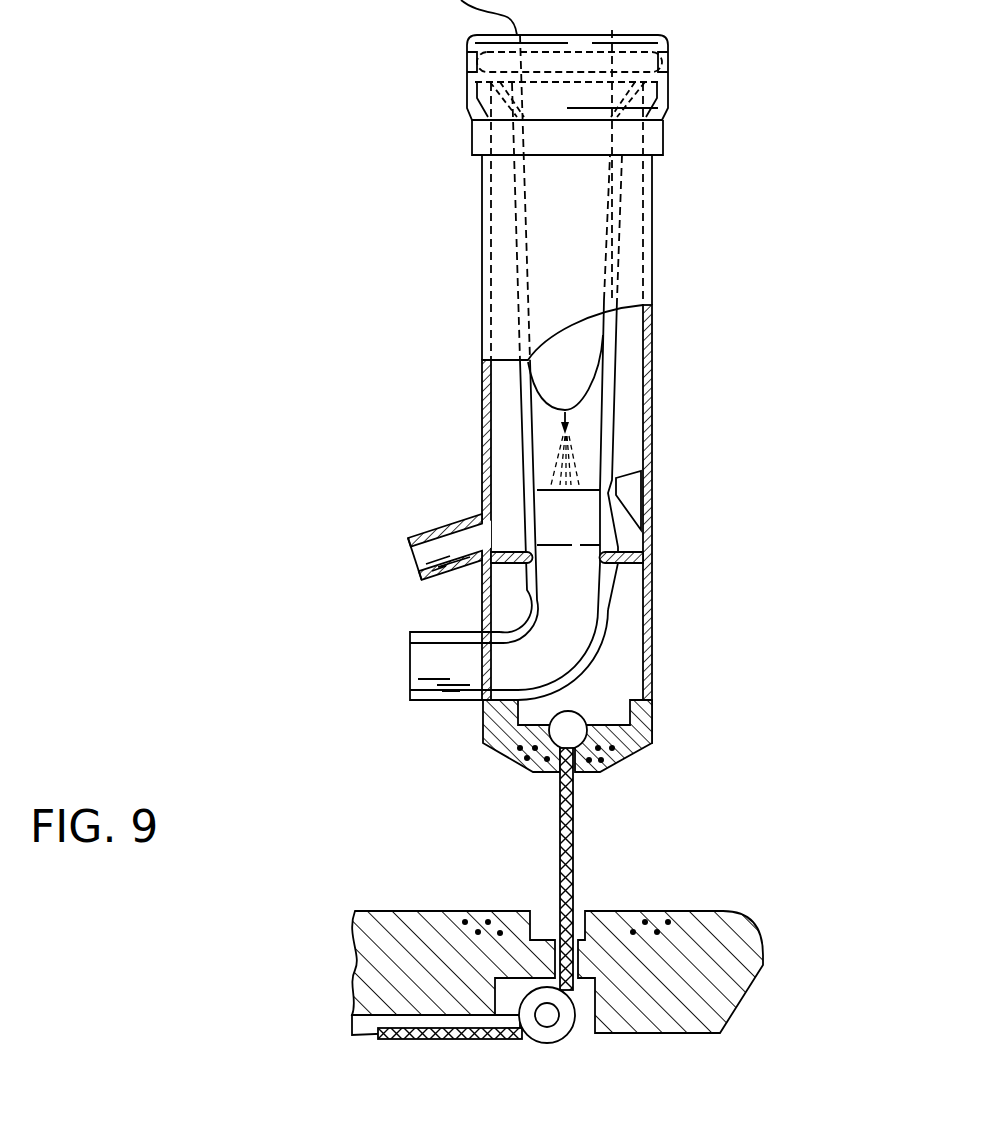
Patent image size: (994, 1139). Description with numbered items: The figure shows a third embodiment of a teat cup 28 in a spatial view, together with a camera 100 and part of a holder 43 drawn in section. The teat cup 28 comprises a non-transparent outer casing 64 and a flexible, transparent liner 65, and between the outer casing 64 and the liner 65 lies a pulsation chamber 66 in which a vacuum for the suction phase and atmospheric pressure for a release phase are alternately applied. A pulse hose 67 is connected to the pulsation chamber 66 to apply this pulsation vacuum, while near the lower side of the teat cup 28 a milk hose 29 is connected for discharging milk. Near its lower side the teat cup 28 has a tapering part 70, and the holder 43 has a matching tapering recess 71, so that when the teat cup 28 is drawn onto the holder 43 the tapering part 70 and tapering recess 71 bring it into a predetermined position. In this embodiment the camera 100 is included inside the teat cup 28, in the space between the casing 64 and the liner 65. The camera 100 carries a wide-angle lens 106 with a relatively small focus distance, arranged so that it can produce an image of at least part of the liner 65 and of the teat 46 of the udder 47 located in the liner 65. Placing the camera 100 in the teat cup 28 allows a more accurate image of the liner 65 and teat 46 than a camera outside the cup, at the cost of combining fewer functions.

The teat cup 28 is at (380, 372).
The milk hose 29 is at (433, 695).
The holder 43 is at (638, 1016).
The teat 46 is at (660, 0).
The udder 47 is at (607, 30).
The outer casing 64 is at (487, 282).
The flexible liner 65 is at (526, 408).
The pulsation chamber 66 is at (508, 463).
The pulse hose 67 is at (423, 535).
The tapering part 70 is at (527, 760).
The tapering recess 71 is at (602, 922).
The camera 100 is at (638, 495).
The lens 106 is at (618, 477).